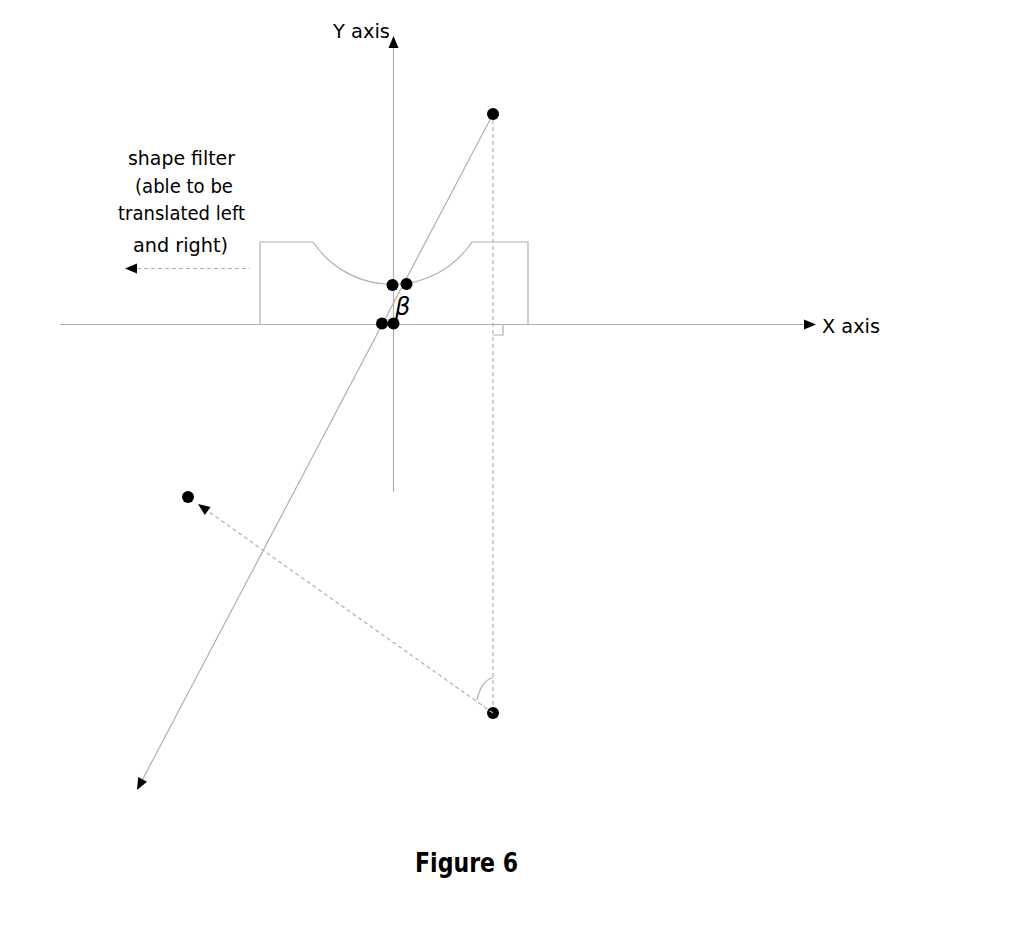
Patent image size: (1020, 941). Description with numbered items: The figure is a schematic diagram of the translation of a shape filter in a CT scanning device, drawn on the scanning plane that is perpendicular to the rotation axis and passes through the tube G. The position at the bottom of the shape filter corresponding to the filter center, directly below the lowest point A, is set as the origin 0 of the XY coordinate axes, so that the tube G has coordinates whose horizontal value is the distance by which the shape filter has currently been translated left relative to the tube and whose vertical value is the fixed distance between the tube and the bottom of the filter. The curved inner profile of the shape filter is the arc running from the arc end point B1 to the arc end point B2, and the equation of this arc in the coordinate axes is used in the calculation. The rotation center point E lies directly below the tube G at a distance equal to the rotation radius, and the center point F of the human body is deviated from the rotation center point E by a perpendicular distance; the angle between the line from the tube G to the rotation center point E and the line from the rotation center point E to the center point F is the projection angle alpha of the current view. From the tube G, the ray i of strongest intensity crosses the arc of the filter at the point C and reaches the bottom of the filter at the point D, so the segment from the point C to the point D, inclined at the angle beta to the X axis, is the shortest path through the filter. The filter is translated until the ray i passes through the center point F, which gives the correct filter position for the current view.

The lowest point A is at (389, 275).
The point C is at (414, 290).
The point D is at (378, 332).
The origin of coordinates 0 is at (400, 332).
The arc end point B1 is at (327, 271).
The arc end point B2 is at (461, 271).
The rotation center point E is at (493, 703).
The center point of the human body F is at (270, 594).
The tube G is at (492, 112).
The ray i is at (288, 464).